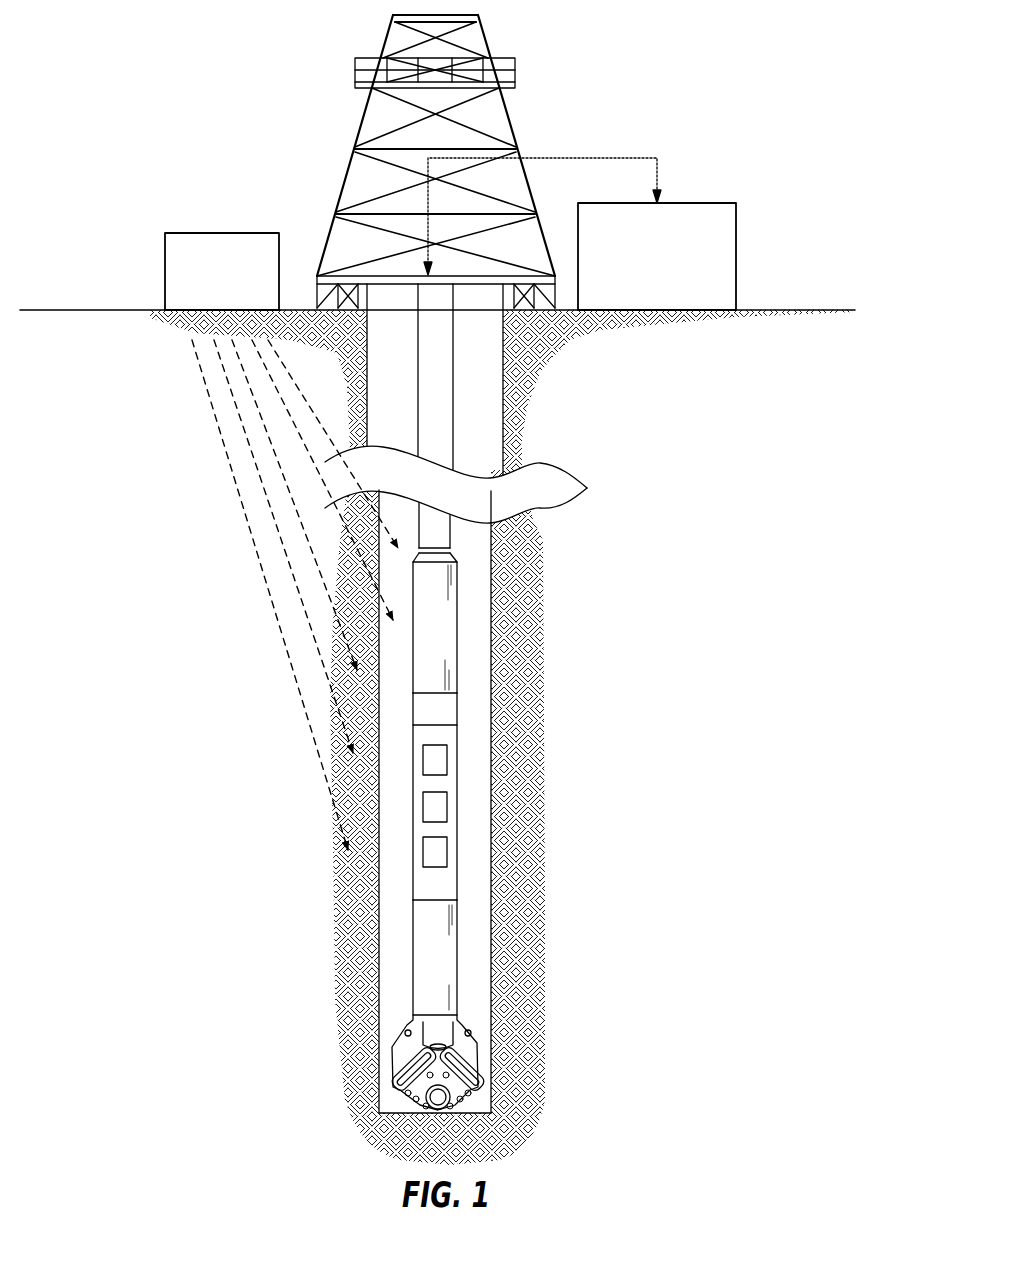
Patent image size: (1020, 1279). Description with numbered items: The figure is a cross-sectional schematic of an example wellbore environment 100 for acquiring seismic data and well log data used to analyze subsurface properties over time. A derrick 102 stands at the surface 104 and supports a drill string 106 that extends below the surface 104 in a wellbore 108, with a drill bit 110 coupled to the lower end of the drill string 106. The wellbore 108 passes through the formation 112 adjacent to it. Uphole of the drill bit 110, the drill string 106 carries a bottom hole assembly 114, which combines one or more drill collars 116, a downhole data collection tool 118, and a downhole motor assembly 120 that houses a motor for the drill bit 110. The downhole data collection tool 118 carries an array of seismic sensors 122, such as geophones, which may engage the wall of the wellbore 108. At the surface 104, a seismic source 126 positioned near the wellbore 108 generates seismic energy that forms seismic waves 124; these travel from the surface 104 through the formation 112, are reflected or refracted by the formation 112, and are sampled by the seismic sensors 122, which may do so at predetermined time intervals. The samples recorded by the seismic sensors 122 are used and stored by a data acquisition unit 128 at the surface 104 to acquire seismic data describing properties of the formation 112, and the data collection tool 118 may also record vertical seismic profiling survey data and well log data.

The wellbore environment 100 is at (162, 56).
The derrick 102 is at (513, 127).
The surface 104 is at (768, 310).
The drill string 106 is at (455, 370).
The wellbore 108 is at (472, 325).
The drill bit 110 is at (470, 1050).
The formation 112 is at (587, 488).
The bottom hole assembly 114 is at (242, 562).
The drill collars 116 is at (445, 665).
The downhole data collection tool 118 is at (452, 890).
The downhole motor assembly 120 is at (457, 1000).
The seismic sensors 122 is at (462, 883).
The seismic waves 124 is at (203, 413).
The seismic source 126 is at (165, 270).
The data acquisition unit 128 is at (693, 203).